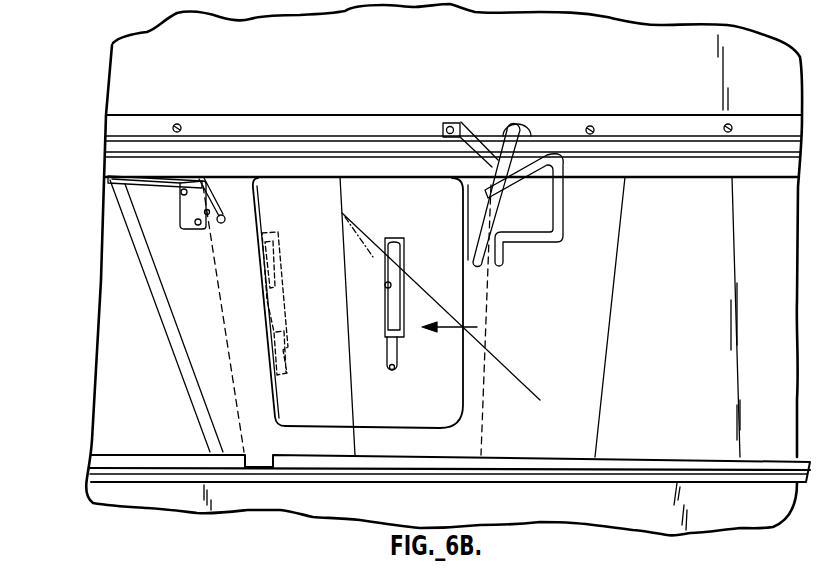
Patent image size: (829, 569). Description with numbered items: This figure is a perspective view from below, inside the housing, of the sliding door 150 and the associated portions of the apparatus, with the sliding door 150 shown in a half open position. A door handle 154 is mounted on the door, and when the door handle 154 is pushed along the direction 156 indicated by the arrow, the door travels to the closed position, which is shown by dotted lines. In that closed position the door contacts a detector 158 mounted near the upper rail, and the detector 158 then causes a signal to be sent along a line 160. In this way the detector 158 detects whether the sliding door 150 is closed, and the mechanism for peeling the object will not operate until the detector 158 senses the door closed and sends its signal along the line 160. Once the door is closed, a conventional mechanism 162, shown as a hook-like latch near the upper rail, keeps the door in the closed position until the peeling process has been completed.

The sliding door 150 is at (583, 281).
The door handle 154 is at (405, 260).
The direction 156 is at (477, 327).
The detector 158 is at (198, 232).
The line 160 is at (135, 187).
The conventional mechanism 162 is at (532, 148).